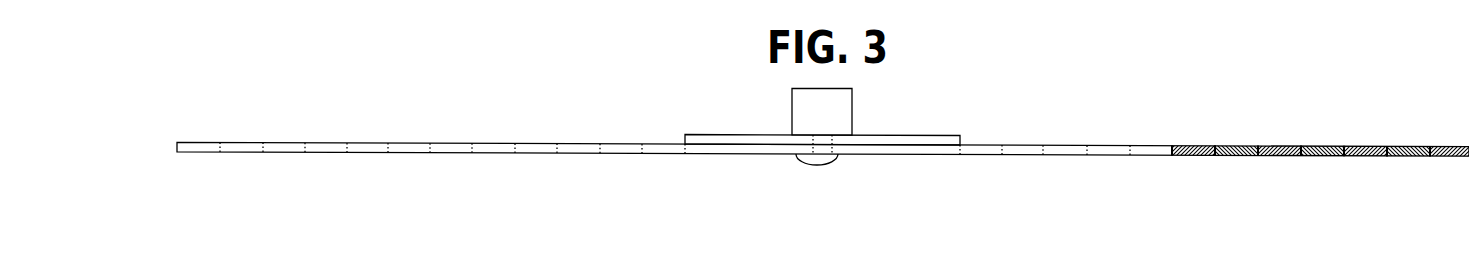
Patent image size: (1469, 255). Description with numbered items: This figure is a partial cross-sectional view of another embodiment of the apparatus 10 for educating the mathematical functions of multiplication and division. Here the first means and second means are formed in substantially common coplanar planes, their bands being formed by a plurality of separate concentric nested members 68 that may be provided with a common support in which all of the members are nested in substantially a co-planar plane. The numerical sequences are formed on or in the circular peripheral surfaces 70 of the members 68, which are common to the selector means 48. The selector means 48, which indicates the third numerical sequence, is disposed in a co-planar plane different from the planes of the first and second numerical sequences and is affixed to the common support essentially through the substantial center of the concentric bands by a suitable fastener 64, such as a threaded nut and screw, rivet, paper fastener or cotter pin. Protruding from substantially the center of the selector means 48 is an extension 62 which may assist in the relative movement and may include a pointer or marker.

The apparatus 10 is at (1148, 97).
The selector means 48 is at (945, 131).
The extension 62 is at (853, 108).
The fastener 64 is at (830, 163).
The concentric nested members 68 is at (1067, 139).
The circular peripheral surfaces 70 is at (1245, 132).